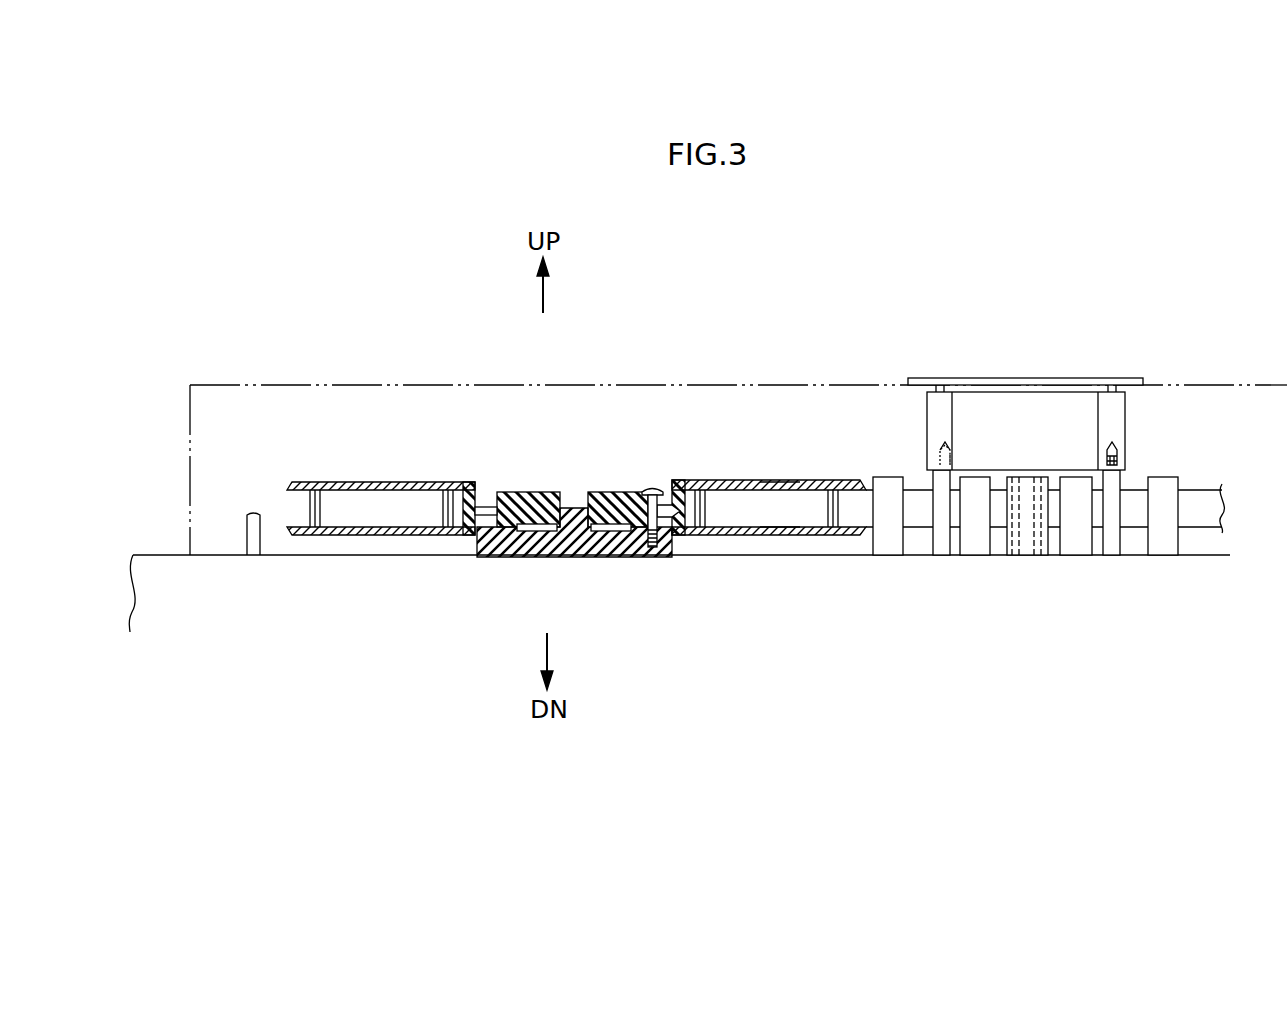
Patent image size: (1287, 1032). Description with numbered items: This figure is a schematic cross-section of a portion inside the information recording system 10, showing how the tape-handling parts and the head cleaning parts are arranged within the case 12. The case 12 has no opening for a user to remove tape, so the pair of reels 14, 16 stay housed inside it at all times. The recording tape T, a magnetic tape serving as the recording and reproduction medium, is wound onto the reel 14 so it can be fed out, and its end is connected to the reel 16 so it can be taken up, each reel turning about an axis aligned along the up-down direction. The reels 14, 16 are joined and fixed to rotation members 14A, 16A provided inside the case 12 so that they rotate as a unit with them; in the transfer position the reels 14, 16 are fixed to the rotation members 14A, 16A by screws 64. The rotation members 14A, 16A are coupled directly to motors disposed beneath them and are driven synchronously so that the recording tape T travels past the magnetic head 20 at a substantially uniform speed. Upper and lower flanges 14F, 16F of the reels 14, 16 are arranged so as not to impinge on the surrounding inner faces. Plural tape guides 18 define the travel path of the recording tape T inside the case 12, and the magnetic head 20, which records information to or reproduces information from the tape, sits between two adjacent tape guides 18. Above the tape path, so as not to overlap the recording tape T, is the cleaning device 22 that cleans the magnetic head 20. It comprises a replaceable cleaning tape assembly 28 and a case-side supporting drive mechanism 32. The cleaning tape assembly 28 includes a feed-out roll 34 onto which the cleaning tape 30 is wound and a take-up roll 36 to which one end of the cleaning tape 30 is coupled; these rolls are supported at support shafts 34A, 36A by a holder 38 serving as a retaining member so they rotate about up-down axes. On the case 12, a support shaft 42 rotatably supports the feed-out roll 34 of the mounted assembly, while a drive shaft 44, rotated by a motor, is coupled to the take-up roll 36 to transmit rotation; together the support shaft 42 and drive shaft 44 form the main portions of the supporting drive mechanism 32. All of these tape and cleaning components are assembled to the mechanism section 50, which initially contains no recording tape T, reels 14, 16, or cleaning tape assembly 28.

The information recording system 10 is at (677, 358).
The case 12 is at (290, 384).
The reel 14 is at (576, 434).
The reel 16 is at (713, 464).
The rotation member 14A is at (817, 471).
The rotation member 16A is at (755, 481).
The flange 14F is at (577, 559).
The flange 16F is at (568, 557).
The tape guide 18 is at (885, 547).
The magnetic head 20 is at (1025, 545).
The cleaning device 22 is at (1068, 393).
The cleaning tape assembly 28 is at (1042, 390).
The cleaning tape 30 is at (1017, 410).
The supporting drive mechanism 32 is at (1180, 459).
The feed-out roll 34 is at (937, 412).
The support shaft 34A is at (938, 390).
The take-up roll 36 is at (1117, 415).
The support shaft 36A is at (1112, 390).
The holder 38 is at (1060, 377).
The support shaft 42 is at (938, 547).
The drive shaft 44 is at (1110, 545).
The mechanism section 50 is at (160, 553).
The screw 64 is at (650, 487).
The recording tape T is at (852, 512).